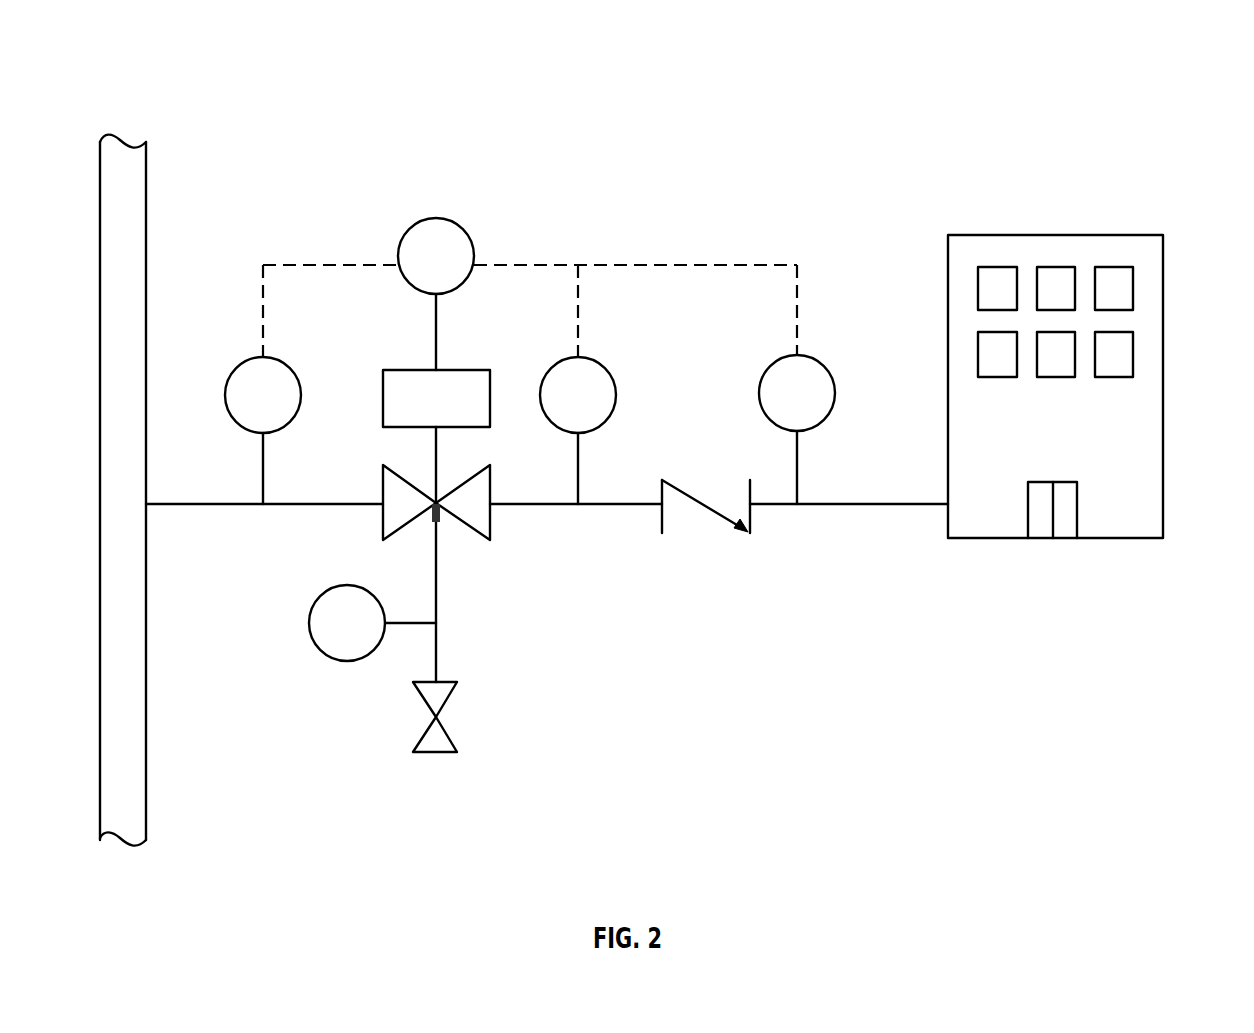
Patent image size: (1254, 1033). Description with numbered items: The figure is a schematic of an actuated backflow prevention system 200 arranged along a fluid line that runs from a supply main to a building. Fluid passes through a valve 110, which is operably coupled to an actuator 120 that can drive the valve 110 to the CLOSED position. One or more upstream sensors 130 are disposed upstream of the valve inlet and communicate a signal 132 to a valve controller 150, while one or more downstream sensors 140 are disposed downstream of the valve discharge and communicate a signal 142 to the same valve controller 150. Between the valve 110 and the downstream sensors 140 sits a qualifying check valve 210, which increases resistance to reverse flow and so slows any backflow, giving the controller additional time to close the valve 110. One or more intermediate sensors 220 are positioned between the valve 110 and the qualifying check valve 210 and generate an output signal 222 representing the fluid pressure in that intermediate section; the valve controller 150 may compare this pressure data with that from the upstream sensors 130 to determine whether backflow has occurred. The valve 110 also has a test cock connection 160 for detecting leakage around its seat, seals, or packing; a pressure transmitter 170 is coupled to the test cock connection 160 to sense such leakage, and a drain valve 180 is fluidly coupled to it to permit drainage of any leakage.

The actuated backflow prevention system 200 is at (654, 437).
The valve 110 is at (490, 465).
The actuator 120 is at (436, 398).
The upstream sensor 130 is at (263, 430).
The signal 132 is at (283, 266).
The downstream sensor 140 is at (797, 429).
The signal 142 is at (685, 266).
The valve controller 150 is at (436, 256).
The test cock connection 160 is at (437, 522).
The pressure transmitter 170 is at (372, 623).
The drain valve 180 is at (440, 717).
The qualifying check valve 210 is at (750, 525).
The intermediate sensor 220 is at (578, 430).
The output signal 222 is at (578, 330).